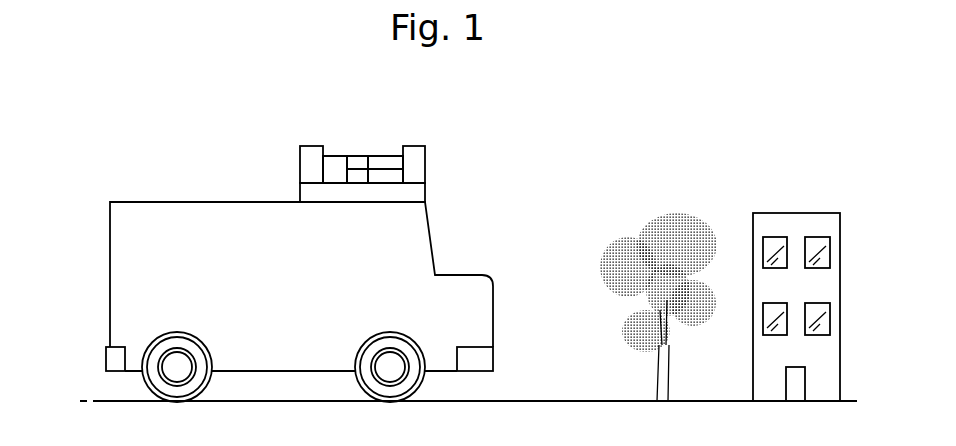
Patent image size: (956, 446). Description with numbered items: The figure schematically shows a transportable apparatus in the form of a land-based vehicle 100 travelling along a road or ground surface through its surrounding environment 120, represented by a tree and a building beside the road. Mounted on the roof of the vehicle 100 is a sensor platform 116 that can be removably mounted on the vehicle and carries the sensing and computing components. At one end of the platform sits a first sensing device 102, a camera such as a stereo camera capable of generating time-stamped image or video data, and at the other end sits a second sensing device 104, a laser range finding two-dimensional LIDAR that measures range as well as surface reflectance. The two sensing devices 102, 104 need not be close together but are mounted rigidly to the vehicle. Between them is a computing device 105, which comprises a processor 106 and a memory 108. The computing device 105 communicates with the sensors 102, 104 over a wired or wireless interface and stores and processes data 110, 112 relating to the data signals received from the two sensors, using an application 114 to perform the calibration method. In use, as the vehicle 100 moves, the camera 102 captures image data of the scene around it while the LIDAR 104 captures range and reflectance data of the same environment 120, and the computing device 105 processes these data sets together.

The vehicle 100 is at (109, 250).
The first sensing device 102 is at (307, 158).
The second laser range finding 2D LIDAR sensing device 104 is at (420, 150).
The computing device 105 is at (335, 146).
The processor 106 is at (330, 173).
The memory 108 is at (357, 160).
The data 110 is at (397, 162).
The data 112 is at (397, 177).
The application 114 is at (368, 175).
The sensor platform 116 is at (418, 195).
The surrounding environment 120 is at (568, 303).